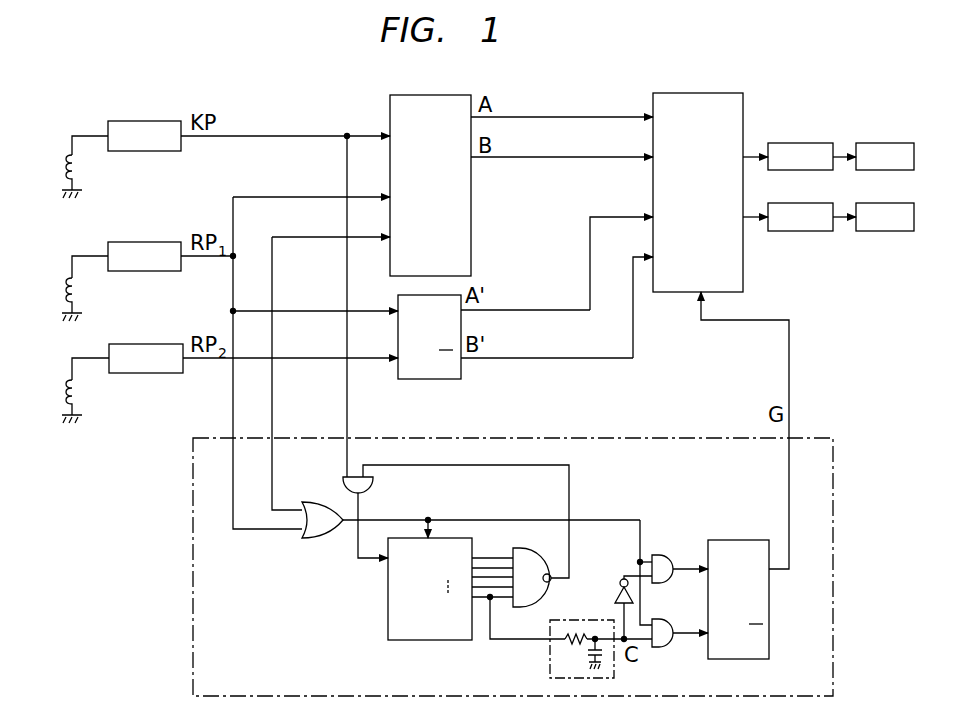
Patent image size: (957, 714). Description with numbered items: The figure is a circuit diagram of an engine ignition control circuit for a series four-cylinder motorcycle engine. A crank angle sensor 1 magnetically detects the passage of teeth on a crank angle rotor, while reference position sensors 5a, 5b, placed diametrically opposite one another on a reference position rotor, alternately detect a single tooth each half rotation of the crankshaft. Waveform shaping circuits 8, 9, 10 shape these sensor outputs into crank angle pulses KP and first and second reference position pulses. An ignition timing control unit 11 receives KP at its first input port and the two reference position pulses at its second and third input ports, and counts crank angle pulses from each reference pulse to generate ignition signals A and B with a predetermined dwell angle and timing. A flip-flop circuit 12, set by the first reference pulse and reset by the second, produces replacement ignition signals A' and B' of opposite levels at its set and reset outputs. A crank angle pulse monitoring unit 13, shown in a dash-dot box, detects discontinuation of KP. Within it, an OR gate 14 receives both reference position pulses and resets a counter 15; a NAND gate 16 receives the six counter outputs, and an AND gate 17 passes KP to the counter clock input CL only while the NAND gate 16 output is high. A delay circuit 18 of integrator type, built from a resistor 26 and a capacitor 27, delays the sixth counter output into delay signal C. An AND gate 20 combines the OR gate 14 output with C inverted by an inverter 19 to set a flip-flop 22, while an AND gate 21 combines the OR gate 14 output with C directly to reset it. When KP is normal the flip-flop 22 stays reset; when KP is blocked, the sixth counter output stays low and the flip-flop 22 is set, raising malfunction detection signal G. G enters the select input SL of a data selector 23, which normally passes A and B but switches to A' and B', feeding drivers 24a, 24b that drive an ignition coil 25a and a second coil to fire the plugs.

The crank angle sensor 1 is at (76, 170).
The reference position sensor 5a is at (76, 292).
The reference position sensor 5b is at (76, 394).
The waveform shaping circuit 8 is at (150, 121).
The waveform shaping circuit 9 is at (150, 242).
The waveform shaping circuit 10 is at (150, 344).
The ignition timing control unit 11 is at (430, 95).
The flip-flop circuit 12 is at (430, 379).
The crank angle pulse monitoring unit 13 is at (193, 470).
The OR gate 14 is at (312, 502).
The counter 15 is at (430, 640).
The NAND gate 16 is at (527, 548).
The AND gate 17 is at (373, 487).
The delay circuit 18 is at (558, 636).
The inverter 19 is at (614, 594).
The AND gate 20 is at (660, 555).
The AND gate 21 is at (665, 619).
The flip-flop 22 is at (733, 540).
The data selector 23 is at (700, 93).
The driver 24a is at (800, 143).
The driver 24b is at (800, 203).
The ignition coil 25a is at (884, 143).
The resistor 26 is at (572, 634).
The capacitor 27 is at (589, 655).